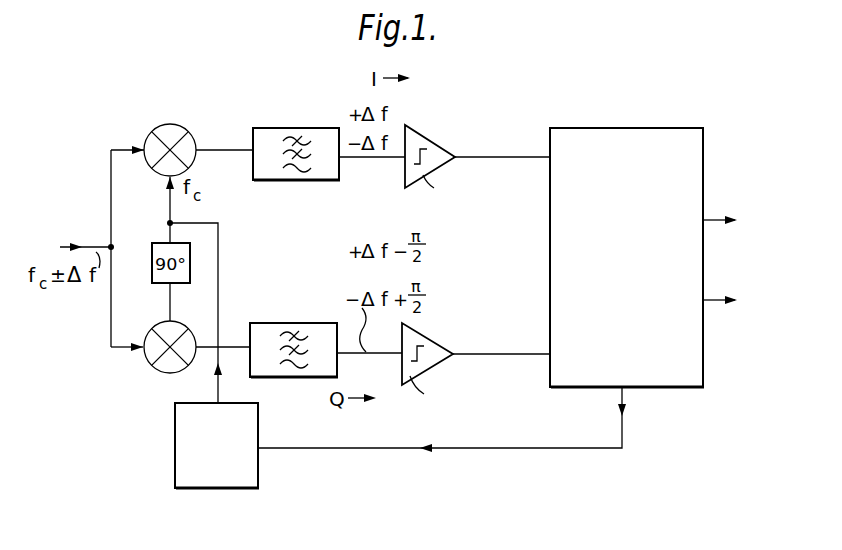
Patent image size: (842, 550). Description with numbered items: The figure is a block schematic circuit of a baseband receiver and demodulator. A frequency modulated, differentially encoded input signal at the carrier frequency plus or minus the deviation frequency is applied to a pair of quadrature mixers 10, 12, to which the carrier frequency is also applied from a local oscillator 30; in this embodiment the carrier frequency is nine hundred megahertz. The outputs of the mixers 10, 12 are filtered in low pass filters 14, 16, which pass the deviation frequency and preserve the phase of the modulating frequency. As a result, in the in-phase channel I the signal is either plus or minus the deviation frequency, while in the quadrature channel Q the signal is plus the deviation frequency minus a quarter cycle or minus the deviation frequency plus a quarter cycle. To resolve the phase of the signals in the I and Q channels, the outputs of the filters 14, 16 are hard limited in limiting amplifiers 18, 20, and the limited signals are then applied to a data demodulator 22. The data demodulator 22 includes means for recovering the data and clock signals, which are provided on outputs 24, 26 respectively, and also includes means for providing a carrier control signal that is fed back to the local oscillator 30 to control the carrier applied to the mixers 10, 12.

The quadrature mixer 10 is at (158, 140).
The quadrature mixer 12 is at (160, 330).
The low pass filter 14 is at (267, 135).
The low pass filter 16 is at (267, 330).
The limiting amplifier 18 is at (437, 152).
The limiting amplifier 20 is at (438, 353).
The data demodulator 22 is at (582, 134).
The output 24 is at (713, 217).
The output 26 is at (710, 303).
The local oscillator 30 is at (185, 442).